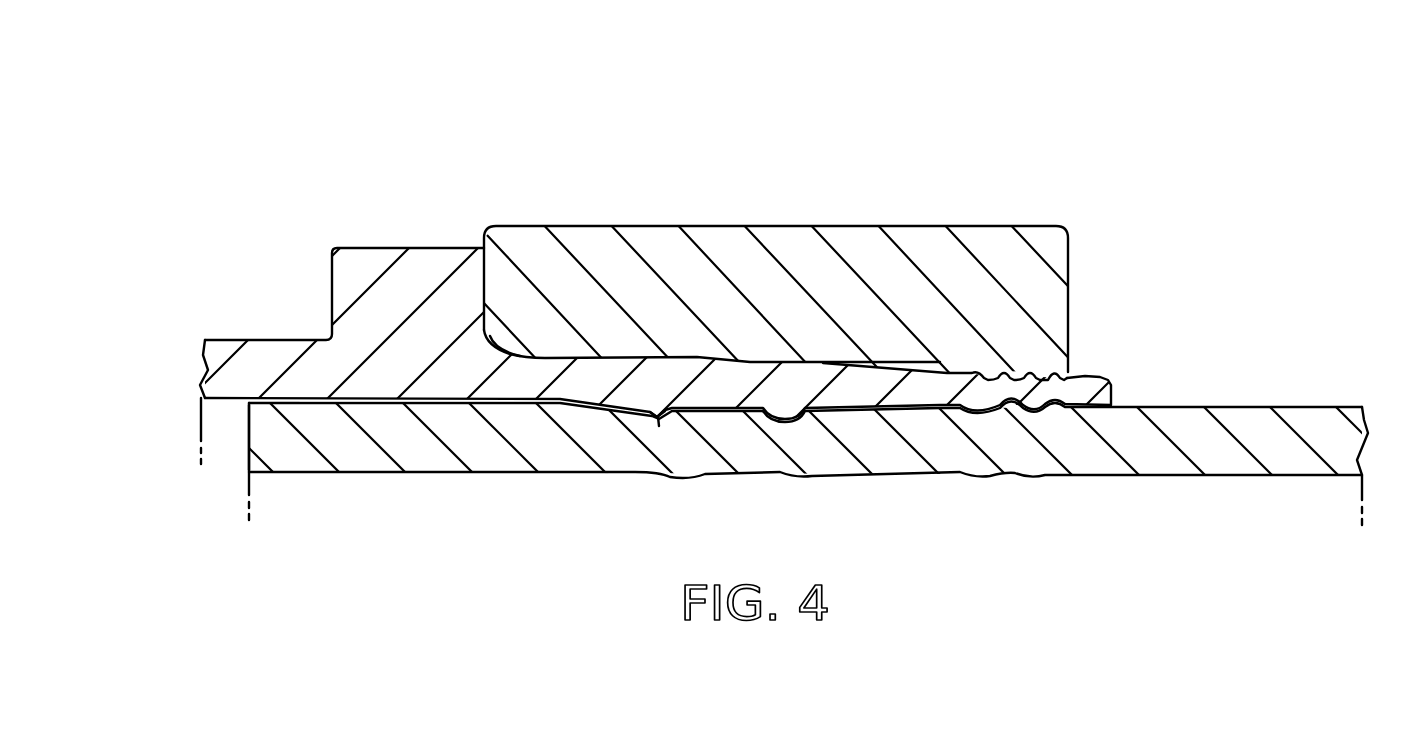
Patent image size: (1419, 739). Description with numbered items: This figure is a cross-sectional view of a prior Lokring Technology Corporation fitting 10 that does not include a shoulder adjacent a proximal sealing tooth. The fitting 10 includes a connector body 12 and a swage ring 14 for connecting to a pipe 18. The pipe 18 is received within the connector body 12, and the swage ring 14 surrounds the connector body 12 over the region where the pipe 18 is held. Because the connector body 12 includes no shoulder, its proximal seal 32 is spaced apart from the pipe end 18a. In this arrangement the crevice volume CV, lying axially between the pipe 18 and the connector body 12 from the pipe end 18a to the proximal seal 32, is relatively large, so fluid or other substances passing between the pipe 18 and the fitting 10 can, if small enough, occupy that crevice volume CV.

The fitting 10 is at (552, 130).
The connector body 12 is at (386, 229).
The swage ring 14 is at (852, 210).
The pipe 18 is at (1240, 388).
The pipe end 18a is at (247, 425).
The proximal seal 32 is at (652, 437).
The crevice volume CV is at (443, 400).